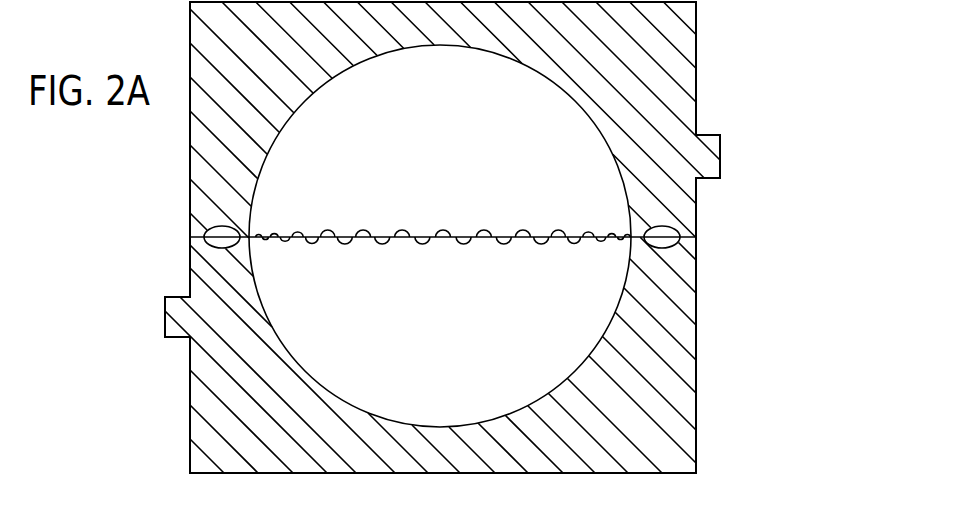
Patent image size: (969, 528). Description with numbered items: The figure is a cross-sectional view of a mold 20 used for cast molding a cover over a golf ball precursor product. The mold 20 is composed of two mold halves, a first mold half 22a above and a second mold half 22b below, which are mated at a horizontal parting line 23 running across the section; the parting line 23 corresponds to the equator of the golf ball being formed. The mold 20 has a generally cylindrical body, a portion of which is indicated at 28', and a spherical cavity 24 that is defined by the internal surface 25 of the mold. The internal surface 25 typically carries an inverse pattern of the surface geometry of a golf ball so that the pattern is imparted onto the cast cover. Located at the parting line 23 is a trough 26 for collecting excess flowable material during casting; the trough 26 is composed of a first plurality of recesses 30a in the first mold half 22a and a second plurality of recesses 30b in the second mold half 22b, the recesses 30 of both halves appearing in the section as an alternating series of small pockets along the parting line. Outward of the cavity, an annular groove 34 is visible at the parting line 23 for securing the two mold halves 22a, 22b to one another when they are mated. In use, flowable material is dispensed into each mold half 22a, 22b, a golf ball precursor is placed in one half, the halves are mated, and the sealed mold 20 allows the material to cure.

The mold 20 is at (789, 41).
The first mold half 22a is at (188, 60).
The second mold half 22b is at (697, 380).
The parting line 23 is at (694, 236).
The spherical cavity 24 is at (558, 115).
The internal surface 25 is at (423, 398).
The trough 26 is at (287, 238).
The mold block surface 28' is at (712, 126).
The textured parting surface 30 is at (496, 241).
The first plurality of recesses 30a is at (443, 231).
The second plurality of recesses 30b is at (380, 242).
The annular groove 34 is at (220, 229).